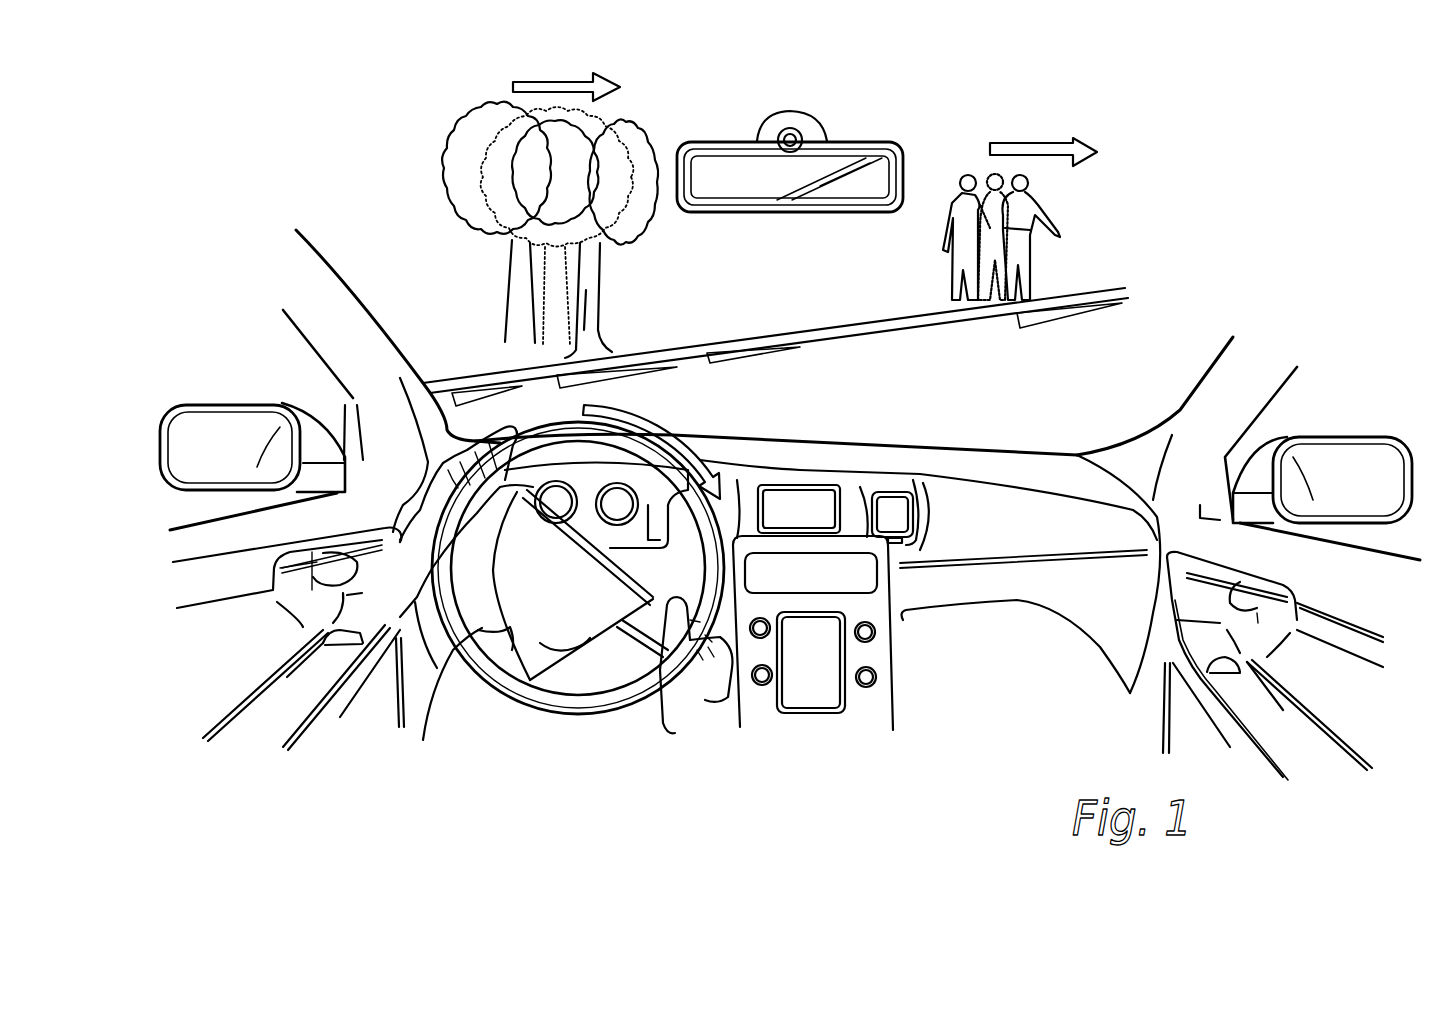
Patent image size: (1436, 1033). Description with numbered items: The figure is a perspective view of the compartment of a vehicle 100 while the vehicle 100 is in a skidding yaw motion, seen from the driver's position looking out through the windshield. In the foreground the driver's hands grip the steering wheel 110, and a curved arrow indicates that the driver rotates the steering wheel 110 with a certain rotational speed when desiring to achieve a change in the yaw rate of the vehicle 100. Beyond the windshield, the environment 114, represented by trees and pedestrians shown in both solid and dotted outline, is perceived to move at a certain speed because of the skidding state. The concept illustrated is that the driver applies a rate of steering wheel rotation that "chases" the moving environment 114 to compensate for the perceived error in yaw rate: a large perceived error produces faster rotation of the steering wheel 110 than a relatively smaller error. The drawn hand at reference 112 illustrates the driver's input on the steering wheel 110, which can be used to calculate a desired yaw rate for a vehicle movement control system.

The vehicle 100 is at (1315, 320).
The steering wheel 110 is at (687, 487).
The driver's hand 112 is at (697, 697).
The environment 114 is at (630, 141).